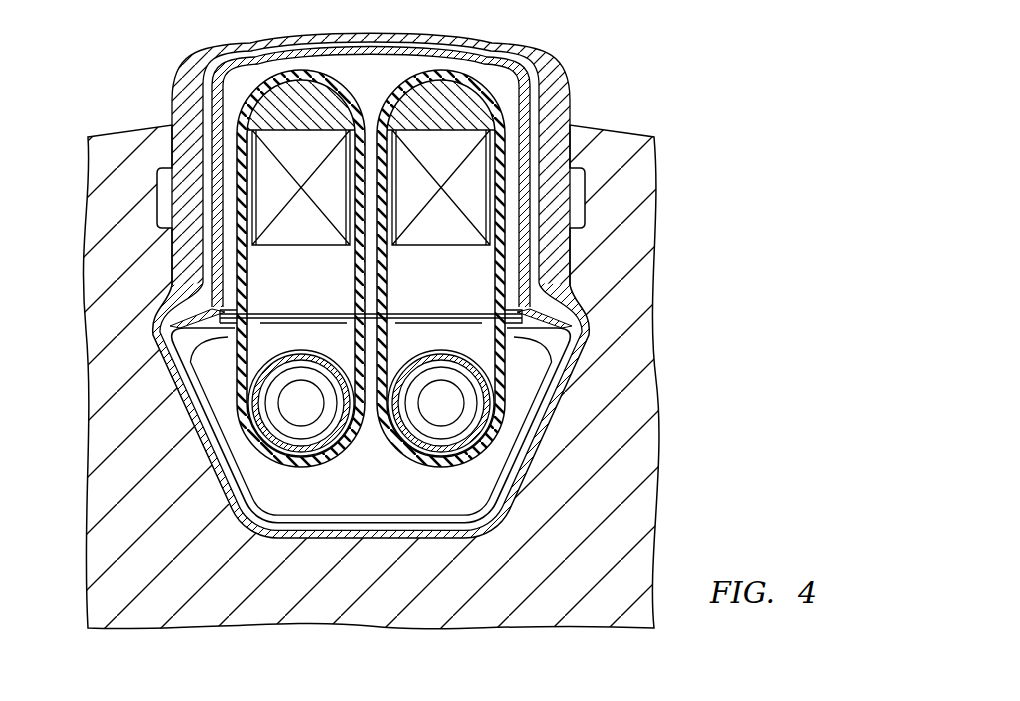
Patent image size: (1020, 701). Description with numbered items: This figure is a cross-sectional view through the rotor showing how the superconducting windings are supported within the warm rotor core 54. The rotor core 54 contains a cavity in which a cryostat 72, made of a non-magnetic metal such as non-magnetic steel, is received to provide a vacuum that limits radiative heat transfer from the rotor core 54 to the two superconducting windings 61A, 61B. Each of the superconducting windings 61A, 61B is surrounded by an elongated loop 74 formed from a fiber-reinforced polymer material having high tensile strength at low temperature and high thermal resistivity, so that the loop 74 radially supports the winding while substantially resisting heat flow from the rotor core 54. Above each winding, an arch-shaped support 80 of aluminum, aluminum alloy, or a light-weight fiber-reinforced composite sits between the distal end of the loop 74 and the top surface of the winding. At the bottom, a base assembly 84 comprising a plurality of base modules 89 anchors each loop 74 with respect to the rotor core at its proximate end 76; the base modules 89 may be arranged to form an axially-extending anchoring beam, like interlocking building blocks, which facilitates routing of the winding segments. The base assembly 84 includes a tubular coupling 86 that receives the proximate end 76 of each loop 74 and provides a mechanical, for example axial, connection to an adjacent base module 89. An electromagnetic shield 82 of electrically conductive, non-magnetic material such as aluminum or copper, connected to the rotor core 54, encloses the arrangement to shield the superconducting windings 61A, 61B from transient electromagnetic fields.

The rotor core 54 is at (635, 367).
The superconducting winding 61A is at (303, 246).
The superconducting winding 61B is at (432, 246).
The cryostat 72 is at (566, 312).
The elongated loop 74 is at (357, 283).
The proximate end 76 is at (324, 457).
The arch-shaped support 80 is at (278, 110).
The electromagnetic shield 82 is at (224, 47).
The base assembly 84 is at (563, 418).
The tubular coupling 86 is at (252, 452).
The base module 89 is at (505, 444).